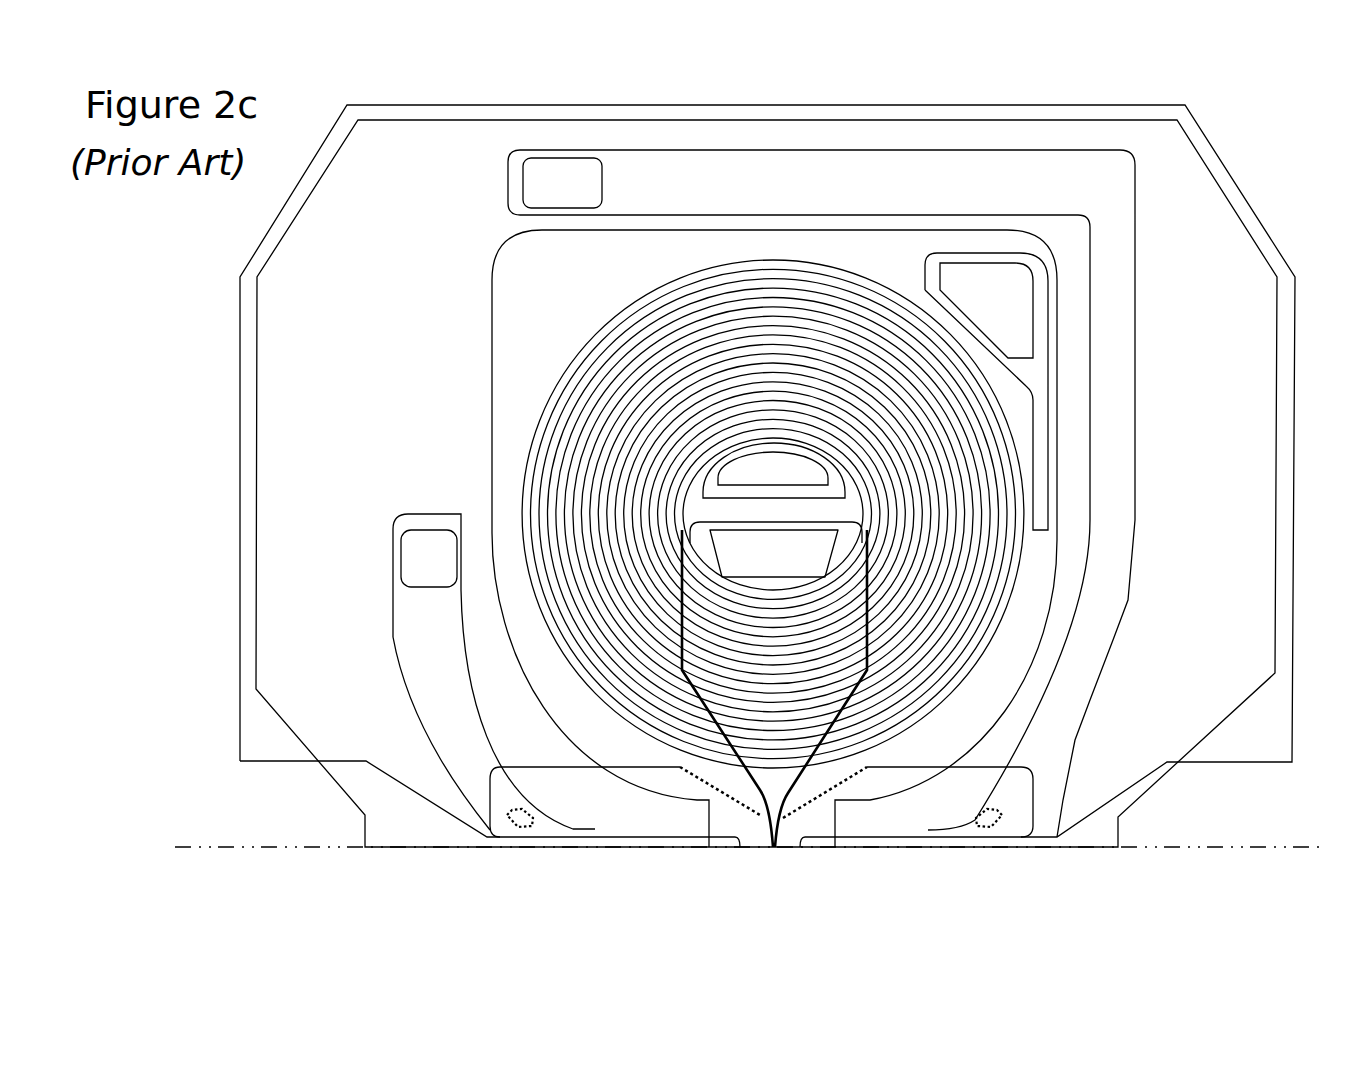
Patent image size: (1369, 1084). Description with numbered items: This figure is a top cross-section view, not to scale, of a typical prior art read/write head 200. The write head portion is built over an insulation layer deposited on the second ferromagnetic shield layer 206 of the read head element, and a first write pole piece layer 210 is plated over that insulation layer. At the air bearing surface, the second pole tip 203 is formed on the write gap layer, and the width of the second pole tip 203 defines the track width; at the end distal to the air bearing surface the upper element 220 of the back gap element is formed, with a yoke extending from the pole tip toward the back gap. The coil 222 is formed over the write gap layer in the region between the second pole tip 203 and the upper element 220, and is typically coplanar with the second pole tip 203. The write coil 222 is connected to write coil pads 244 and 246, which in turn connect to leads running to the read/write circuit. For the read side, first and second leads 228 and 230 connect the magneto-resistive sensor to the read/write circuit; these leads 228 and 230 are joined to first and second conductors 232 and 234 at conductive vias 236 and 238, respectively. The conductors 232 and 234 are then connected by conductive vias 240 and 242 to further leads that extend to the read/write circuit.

The read/write head 200 is at (1273, 176).
The second pole tip (P2) 203 is at (773, 849).
The second ferromagnetic shield layer (S2) 206 is at (1108, 835).
The first write pole piece (P1) layer 210 is at (812, 822).
The upper element of back gap element 220 is at (793, 564).
The coil 222 is at (603, 330).
The first lead 228 is at (917, 815).
The second lead 230 is at (615, 822).
The first conductor 232 is at (1130, 389).
The second conductor 234 is at (447, 684).
The conductive via 236 is at (995, 827).
The conductive via 238 is at (348, 887).
The conductive via 240 is at (580, 193).
The conductive via 242 is at (447, 568).
The write coil pad 244 is at (1006, 293).
The write coil pad 246 is at (793, 478).